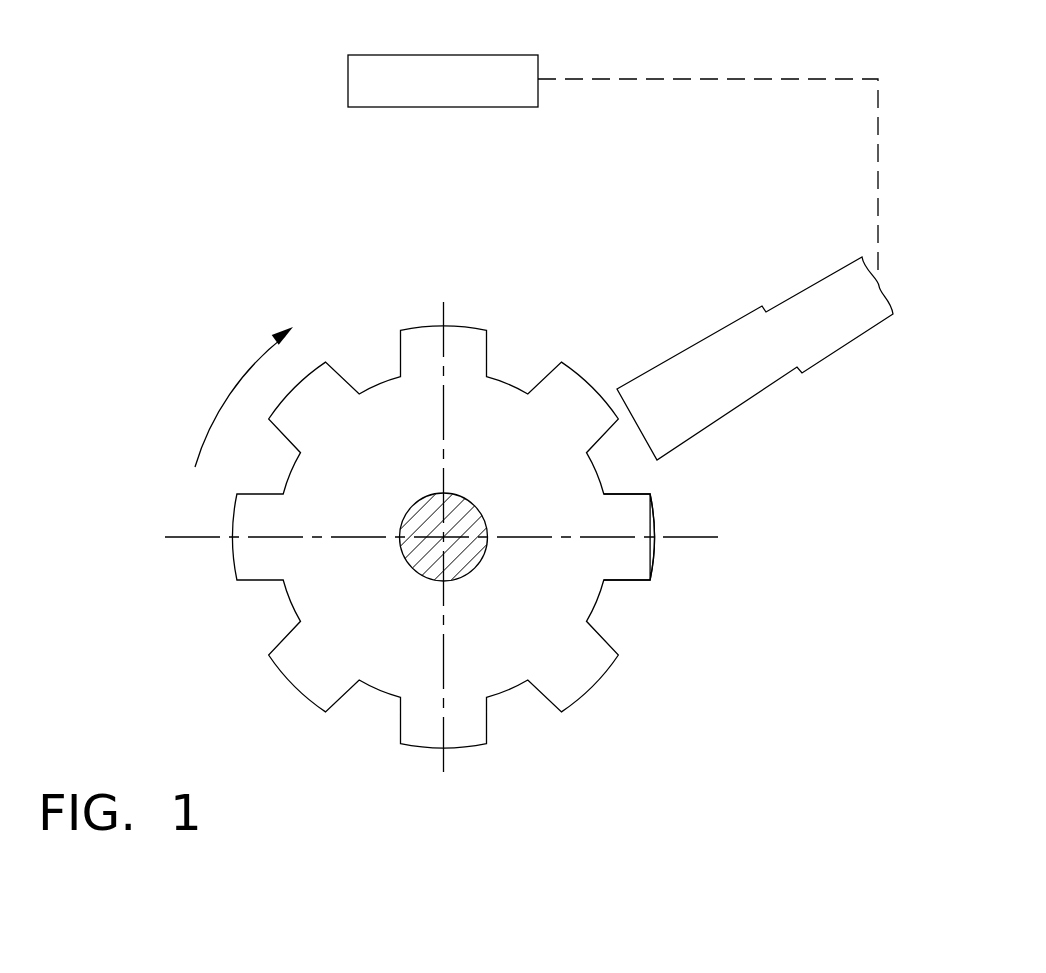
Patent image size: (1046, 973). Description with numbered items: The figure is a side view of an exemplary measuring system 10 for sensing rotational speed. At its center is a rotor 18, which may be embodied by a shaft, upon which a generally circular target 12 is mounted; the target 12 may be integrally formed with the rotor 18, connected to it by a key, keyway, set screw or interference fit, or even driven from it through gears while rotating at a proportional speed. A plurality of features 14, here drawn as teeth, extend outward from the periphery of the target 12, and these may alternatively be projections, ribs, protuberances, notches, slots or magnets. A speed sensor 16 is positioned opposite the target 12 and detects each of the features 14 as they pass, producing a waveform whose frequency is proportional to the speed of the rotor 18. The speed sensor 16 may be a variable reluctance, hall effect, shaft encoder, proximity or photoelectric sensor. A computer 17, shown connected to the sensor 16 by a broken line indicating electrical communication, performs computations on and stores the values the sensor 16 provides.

The measuring system 10 is at (200, 290).
The target 12 is at (552, 328).
The features 14 is at (668, 506).
The speed sensor 16 is at (742, 427).
The computer 17 is at (503, 55).
The rotor 18 is at (460, 578).